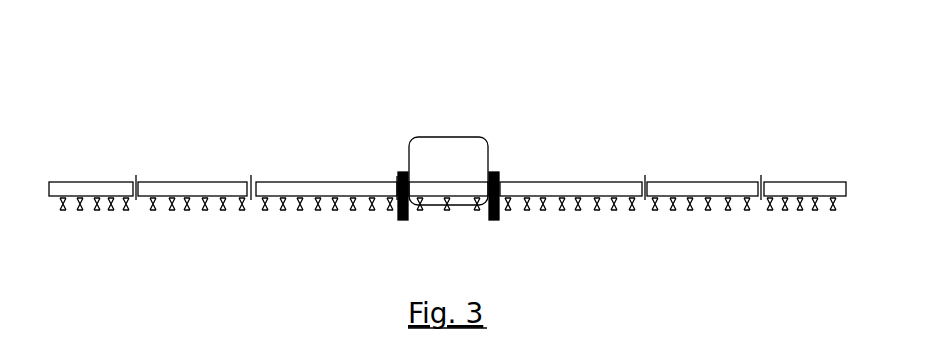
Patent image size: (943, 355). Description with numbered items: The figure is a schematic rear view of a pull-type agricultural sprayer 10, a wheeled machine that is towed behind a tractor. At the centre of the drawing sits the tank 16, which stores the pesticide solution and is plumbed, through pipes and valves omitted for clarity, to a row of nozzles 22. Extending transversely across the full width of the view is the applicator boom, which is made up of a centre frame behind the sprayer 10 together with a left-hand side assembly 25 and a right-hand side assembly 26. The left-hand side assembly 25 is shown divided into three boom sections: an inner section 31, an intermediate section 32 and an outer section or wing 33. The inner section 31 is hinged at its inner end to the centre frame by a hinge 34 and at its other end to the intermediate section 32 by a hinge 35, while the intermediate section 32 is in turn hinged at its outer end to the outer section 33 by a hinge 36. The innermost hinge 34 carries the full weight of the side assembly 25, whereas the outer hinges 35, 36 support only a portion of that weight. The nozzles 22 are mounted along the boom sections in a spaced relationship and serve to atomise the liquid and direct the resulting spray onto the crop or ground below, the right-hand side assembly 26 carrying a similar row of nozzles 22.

The pull-type agricultural sprayer 10 is at (456, 147).
The tank 16 is at (416, 135).
The nozzles 22 is at (63, 216).
The left-hand side assembly 25 is at (223, 141).
The right-hand side assembly 26 is at (692, 124).
The inner section 31 is at (320, 181).
The intermediate section 32 is at (183, 181).
The outer section 33 is at (91, 197).
The hinge 34 is at (386, 168).
The hinge 35 is at (250, 175).
The hinge 36 is at (134, 179).